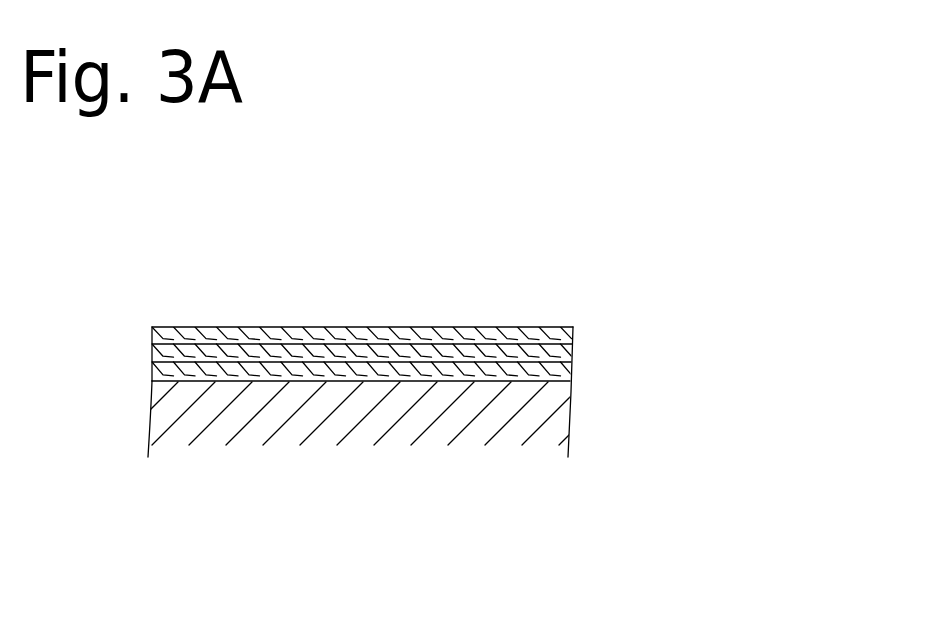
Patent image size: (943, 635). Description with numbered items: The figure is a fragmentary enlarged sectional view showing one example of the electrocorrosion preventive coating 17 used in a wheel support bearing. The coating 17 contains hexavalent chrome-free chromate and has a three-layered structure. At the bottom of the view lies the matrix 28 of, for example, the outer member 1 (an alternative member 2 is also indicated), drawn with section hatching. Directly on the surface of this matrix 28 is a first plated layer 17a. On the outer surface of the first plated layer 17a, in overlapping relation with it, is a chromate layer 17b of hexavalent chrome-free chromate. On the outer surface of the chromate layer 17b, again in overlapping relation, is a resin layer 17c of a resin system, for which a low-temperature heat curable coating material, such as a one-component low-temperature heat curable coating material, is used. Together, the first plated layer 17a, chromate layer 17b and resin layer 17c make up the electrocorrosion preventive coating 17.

The outer member 1 is at (430, 432).
The substrate (alternative) 2 is at (430, 432).
The electrocorrosion preventive coating 17 is at (489, 319).
The first plated layer 17a is at (573, 377).
The chromate layer 17b is at (575, 352).
The resin layer 17c is at (520, 328).
The matrix 28 is at (318, 437).